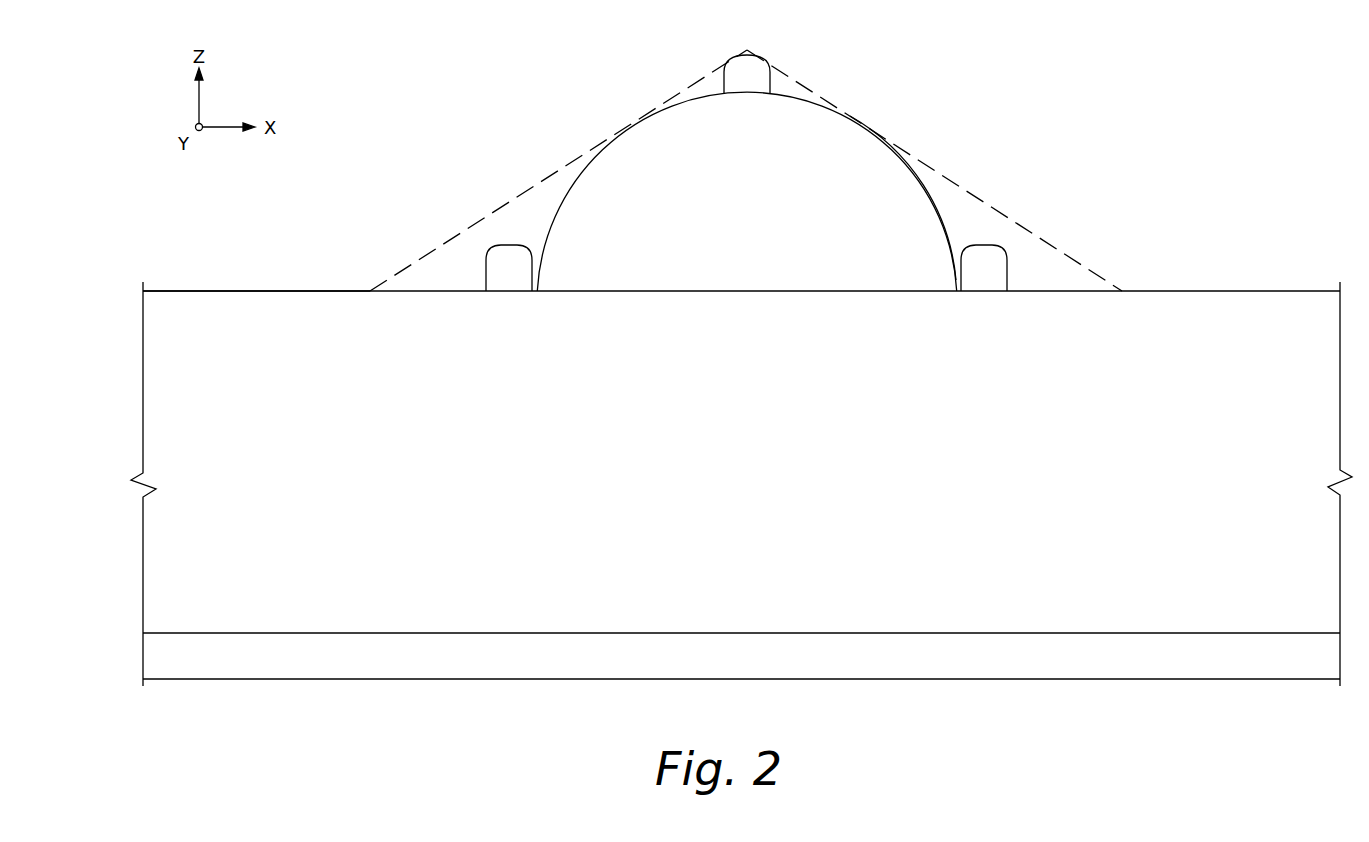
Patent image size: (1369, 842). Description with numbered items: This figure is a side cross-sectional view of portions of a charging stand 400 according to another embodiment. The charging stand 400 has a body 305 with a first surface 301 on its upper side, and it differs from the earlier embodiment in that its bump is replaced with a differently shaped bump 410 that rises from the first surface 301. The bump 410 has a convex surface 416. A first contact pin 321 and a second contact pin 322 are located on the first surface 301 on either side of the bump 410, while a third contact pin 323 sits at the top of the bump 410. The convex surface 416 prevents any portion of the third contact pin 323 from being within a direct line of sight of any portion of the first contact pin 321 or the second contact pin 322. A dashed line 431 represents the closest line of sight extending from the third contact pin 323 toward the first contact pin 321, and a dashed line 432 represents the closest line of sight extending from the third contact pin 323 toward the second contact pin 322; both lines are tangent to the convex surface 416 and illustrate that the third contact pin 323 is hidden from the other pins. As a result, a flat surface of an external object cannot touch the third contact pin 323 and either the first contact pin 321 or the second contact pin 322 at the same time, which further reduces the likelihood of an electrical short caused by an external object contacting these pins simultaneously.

The charging stand 400 is at (1185, 124).
The first surface 301 is at (1240, 291).
The body 305 is at (248, 322).
The bump 410 is at (741, 280).
The convex surface 416 is at (938, 210).
The first contact pin 321 is at (510, 282).
The second contact pin 322 is at (983, 282).
The third contact pin 323 is at (743, 82).
The line 431 is at (447, 240).
The line 432 is at (1043, 238).